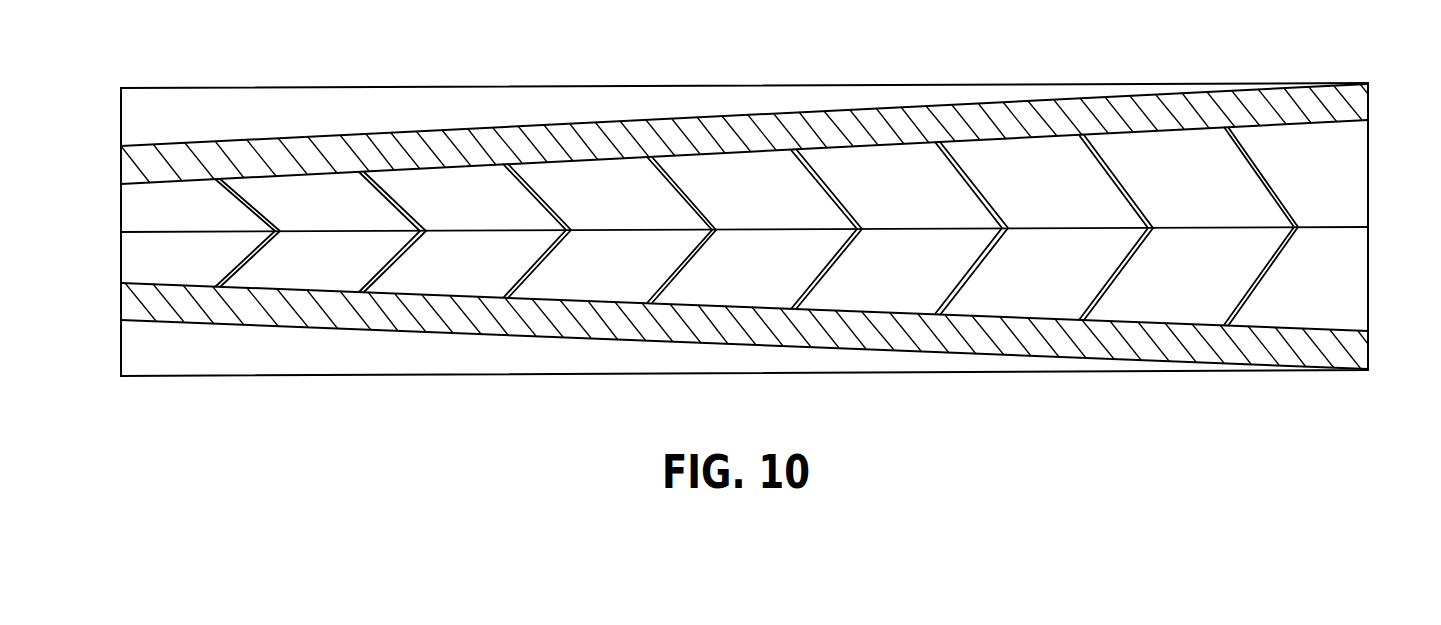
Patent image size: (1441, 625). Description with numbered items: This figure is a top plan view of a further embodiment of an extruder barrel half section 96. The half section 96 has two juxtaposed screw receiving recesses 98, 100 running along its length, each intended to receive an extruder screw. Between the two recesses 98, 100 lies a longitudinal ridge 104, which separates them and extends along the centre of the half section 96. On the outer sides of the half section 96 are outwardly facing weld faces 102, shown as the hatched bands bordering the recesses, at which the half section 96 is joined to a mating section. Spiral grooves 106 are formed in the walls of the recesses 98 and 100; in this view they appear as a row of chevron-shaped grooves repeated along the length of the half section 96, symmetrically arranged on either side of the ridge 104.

The extruder barrel half section 96 is at (667, 87).
The screw receiving recess 98 is at (1320, 166).
The screw receiving recess 100 is at (1334, 291).
The weld faces 102 is at (1107, 106).
The longitudinal ridge 104 is at (121, 232).
The spiral grooves 106 is at (1285, 207).